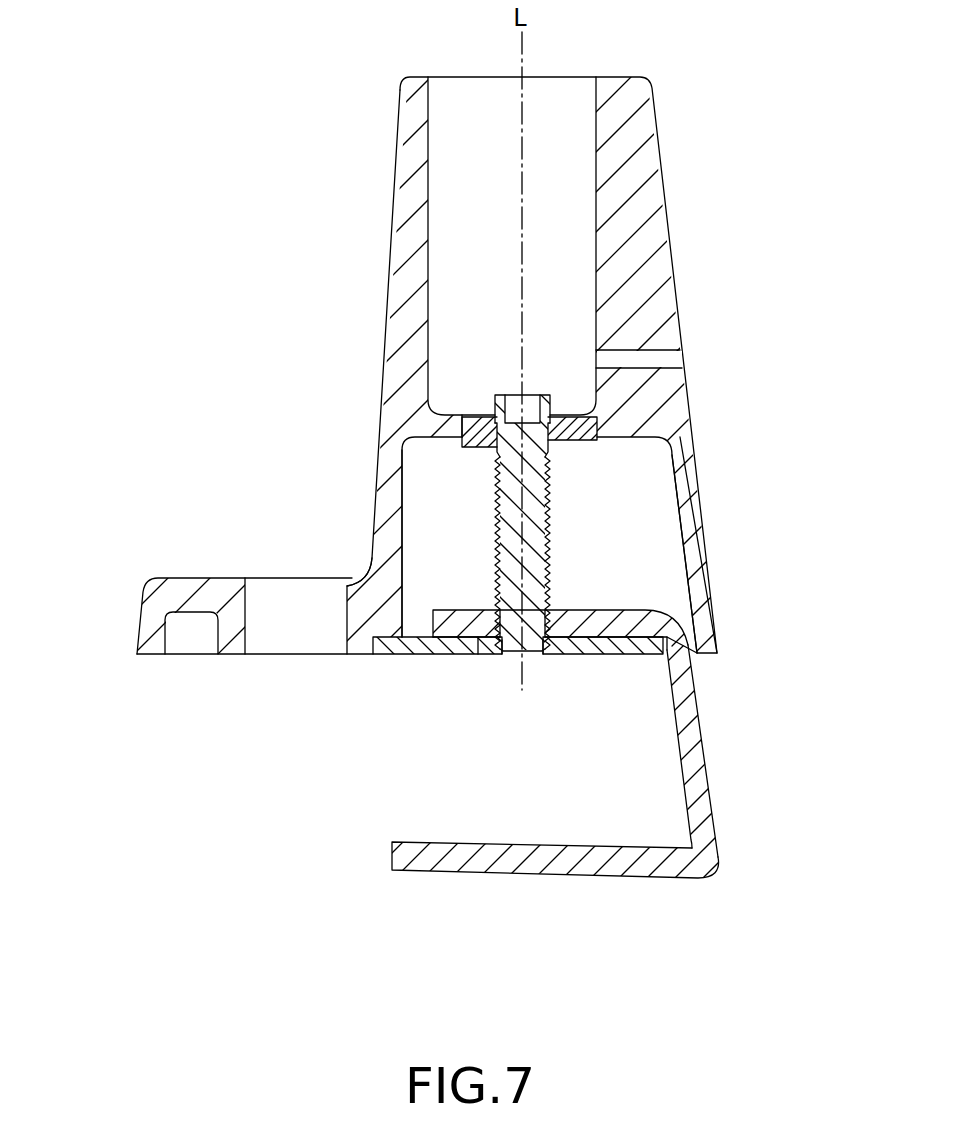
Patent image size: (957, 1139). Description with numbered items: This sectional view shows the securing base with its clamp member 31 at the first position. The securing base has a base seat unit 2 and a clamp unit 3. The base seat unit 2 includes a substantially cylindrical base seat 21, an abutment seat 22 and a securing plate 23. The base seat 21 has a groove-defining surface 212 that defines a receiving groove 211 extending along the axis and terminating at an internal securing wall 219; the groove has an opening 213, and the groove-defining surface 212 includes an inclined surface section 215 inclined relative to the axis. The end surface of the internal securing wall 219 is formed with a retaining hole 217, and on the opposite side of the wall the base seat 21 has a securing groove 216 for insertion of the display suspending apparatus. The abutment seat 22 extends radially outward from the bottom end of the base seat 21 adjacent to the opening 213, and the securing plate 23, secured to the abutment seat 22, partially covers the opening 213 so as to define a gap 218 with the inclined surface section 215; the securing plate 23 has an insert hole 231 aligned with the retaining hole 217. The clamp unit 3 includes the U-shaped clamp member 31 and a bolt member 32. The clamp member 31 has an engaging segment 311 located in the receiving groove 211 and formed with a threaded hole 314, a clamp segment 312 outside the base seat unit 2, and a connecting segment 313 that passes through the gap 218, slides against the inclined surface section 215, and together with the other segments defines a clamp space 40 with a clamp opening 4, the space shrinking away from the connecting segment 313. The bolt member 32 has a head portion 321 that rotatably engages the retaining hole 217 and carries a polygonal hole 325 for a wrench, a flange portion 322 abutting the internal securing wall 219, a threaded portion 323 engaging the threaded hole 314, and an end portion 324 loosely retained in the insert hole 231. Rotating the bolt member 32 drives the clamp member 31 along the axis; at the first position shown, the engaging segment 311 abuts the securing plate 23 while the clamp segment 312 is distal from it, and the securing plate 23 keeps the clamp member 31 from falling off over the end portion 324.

The base seat unit 2 is at (460, 413).
The base seat 21 is at (564, 409).
The securing groove 216 is at (445, 113).
The internal securing wall 219 is at (562, 412).
The retaining hole 217 is at (485, 422).
The receiving groove 211 is at (423, 498).
The groove-defining surface 212 is at (754, 545).
The inclined surface section 215 is at (690, 522).
The opening 213 is at (376, 567).
The gap 218 is at (665, 652).
The abutment seat 22 is at (160, 585).
The securing plate 23 is at (413, 645).
The insert hole 231 is at (492, 645).
The bolt member 32 is at (434, 493).
The head portion 321 is at (402, 357).
The polygonal hole 325 is at (512, 410).
The flange portion 322 is at (477, 440).
The threaded portion 323 is at (505, 562).
The end portion 324 is at (535, 655).
The clamp unit 3 is at (596, 749).
The clamp member 31 is at (596, 749).
The engaging segment 311 is at (598, 612).
The clamp segment 312 is at (593, 870).
The connecting segment 313 is at (698, 740).
The threaded hole 314 is at (588, 623).
The clamp opening 4 is at (410, 790).
The clamp space 40 is at (633, 812).